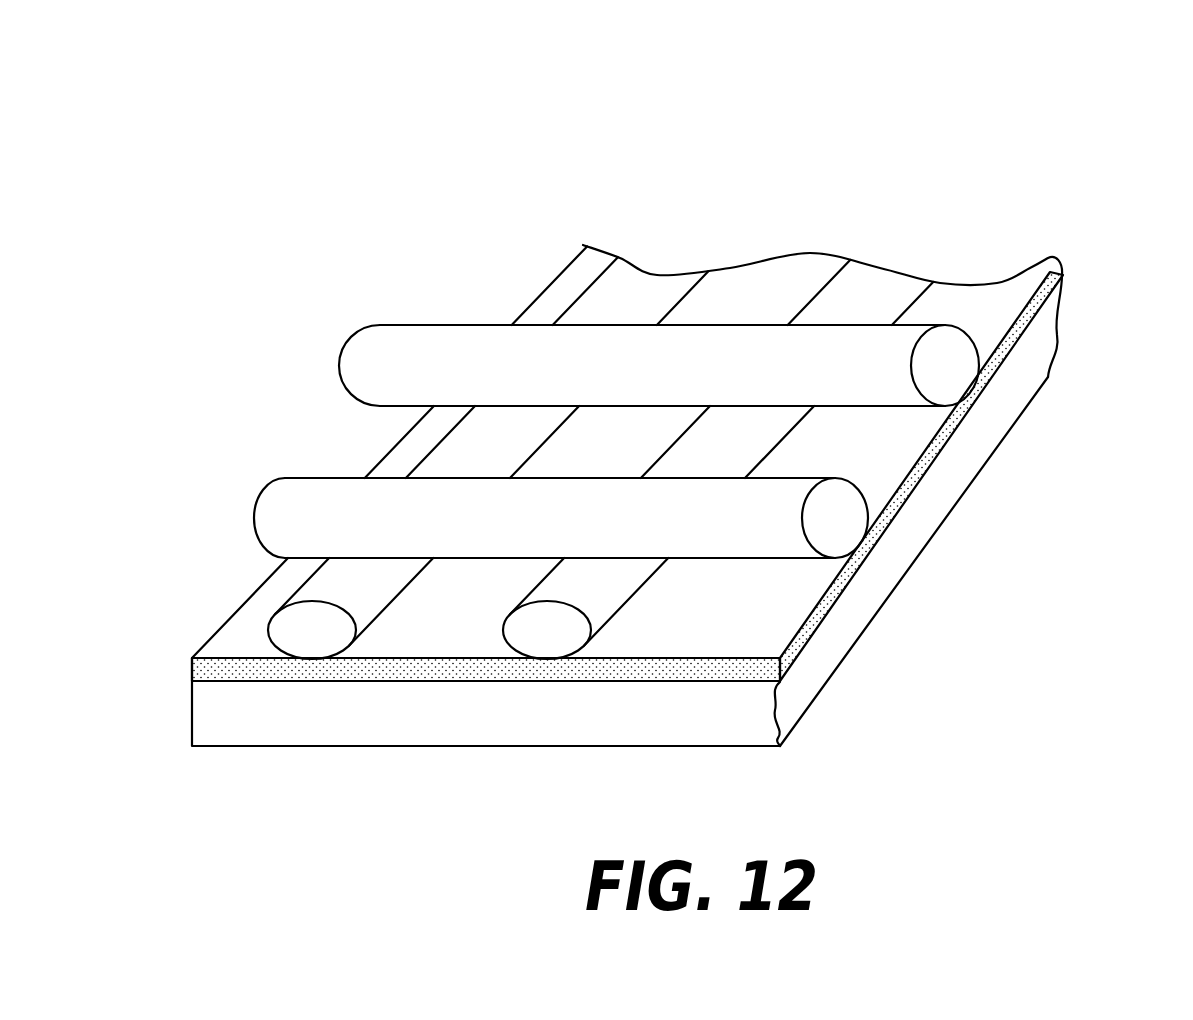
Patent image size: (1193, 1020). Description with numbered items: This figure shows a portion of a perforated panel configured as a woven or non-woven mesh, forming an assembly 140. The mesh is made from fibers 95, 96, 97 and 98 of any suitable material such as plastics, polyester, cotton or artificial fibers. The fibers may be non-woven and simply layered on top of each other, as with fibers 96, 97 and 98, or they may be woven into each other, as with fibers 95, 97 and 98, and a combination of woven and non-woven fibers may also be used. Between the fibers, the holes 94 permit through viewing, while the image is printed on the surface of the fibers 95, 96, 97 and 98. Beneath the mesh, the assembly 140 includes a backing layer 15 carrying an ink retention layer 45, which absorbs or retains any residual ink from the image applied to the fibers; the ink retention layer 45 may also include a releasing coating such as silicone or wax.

The assembly 140 is at (1099, 131).
The backing layer 15 is at (752, 725).
The ink retention layer 45 is at (785, 656).
The holes 94 is at (641, 430).
The fiber 95 is at (960, 345).
The fiber 96 is at (843, 515).
The fiber 97 is at (603, 598).
The fiber 98 is at (330, 583).